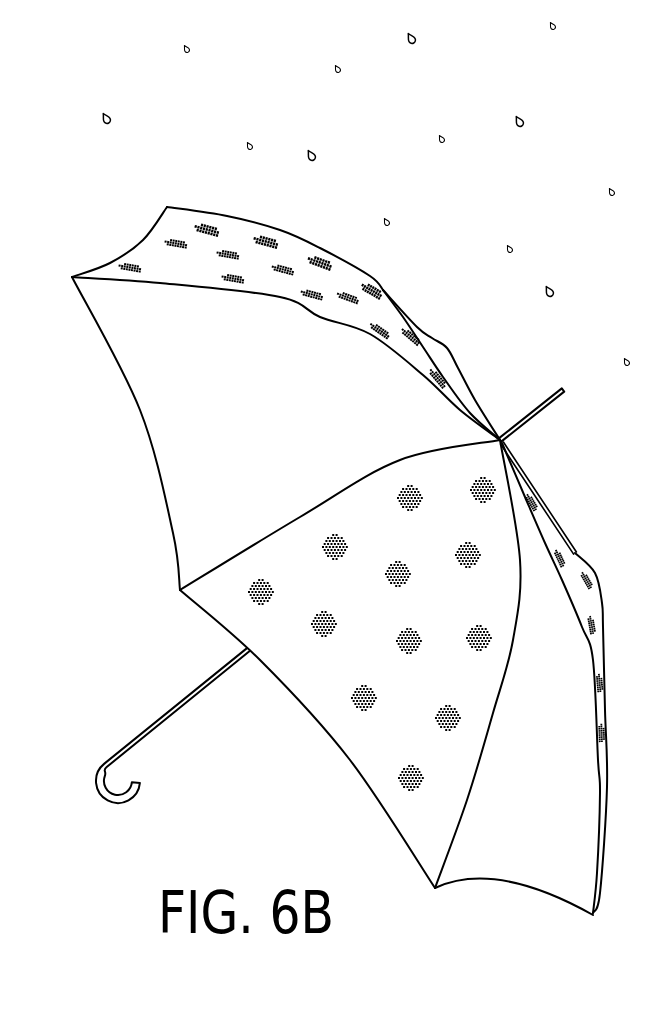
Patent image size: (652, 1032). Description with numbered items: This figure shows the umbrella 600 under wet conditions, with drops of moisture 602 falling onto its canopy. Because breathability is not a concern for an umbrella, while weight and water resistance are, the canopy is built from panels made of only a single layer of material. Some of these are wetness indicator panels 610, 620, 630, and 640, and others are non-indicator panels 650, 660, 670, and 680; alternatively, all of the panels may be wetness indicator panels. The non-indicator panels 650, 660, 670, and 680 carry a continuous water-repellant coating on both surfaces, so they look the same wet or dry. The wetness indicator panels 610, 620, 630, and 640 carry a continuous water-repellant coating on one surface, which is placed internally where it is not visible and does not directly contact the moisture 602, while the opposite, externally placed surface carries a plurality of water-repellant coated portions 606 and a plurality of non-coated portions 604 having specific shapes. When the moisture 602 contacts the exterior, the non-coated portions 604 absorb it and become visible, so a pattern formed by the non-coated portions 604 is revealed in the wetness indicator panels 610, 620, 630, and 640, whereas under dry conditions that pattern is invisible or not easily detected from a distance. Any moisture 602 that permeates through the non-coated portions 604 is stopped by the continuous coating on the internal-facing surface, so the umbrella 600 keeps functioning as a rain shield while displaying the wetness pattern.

The umbrella 600 is at (518, 184).
The moisture 602 is at (523, 119).
The non-coated portions 604 is at (400, 575).
The water-repellant coated portions 606 is at (428, 609).
The wetness indicator panel 610 is at (158, 255).
The wetness indicator panel 620 is at (498, 428).
The wetness indicator panel 630 is at (574, 552).
The wetness indicator panel 640 is at (323, 690).
The non-indicator panel 650 is at (443, 353).
The non-indicator panel 660 is at (525, 463).
The non-indicator panel 670 is at (493, 860).
The non-indicator panel 680 is at (172, 420).